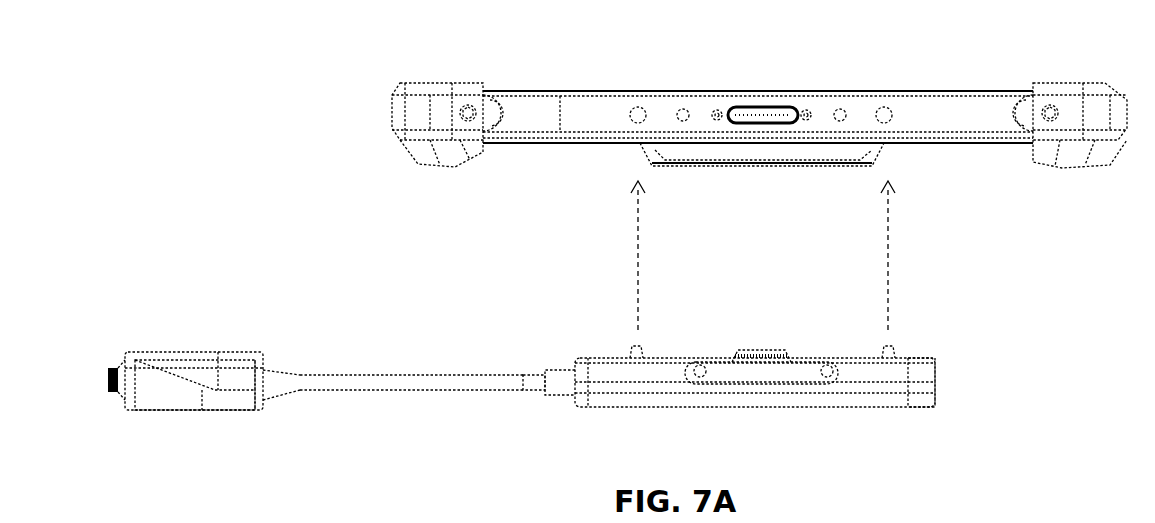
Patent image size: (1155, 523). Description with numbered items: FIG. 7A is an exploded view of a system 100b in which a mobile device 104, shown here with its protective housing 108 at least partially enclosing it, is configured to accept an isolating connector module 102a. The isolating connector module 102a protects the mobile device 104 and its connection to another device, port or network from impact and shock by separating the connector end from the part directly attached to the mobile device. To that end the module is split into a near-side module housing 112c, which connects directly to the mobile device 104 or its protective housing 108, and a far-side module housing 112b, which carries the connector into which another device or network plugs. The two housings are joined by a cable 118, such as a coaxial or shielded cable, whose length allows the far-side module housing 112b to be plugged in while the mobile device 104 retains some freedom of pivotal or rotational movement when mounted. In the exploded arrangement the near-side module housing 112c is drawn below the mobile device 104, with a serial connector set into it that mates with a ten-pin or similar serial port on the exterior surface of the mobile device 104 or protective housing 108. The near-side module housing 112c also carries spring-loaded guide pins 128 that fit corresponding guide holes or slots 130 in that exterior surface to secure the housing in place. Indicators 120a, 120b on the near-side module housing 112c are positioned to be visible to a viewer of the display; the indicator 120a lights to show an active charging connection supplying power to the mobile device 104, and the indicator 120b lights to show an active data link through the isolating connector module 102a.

The system 100b is at (138, 88).
The mobile device 104 is at (345, 90).
The protective housing 108 is at (565, 120).
The guide holes or slots 130 is at (637, 106).
The isolating connector module 102a is at (1020, 330).
The spring-loaded guide pins 128 is at (630, 349).
The indicator 120a is at (700, 378).
The indicator 120b is at (826, 378).
The near-side module housing 112c is at (890, 395).
The cable 118 is at (362, 382).
The far-side module housing 112b is at (180, 365).